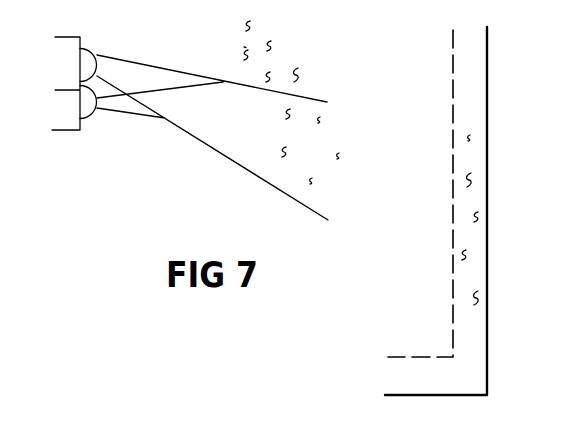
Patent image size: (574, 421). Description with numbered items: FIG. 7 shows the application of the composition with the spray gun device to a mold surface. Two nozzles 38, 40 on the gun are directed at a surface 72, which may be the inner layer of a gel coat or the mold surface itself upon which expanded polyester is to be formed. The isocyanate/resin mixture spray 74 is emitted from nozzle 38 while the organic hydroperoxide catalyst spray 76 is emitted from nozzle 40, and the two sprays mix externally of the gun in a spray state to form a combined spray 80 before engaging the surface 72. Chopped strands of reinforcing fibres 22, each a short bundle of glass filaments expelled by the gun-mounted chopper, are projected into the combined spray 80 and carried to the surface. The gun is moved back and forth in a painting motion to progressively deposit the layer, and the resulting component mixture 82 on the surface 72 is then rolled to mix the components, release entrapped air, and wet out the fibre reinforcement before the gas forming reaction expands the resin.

The reinforcing fibres 22 is at (272, 43).
The nozzle 38 is at (88, 63).
The nozzle 40 is at (88, 103).
The surface 72 is at (487, 217).
The isocyanate/resin mixture spray 74 is at (145, 76).
The organic hydroperoxide catalyst spray 76 is at (135, 108).
The combined spray 80 is at (223, 128).
The component mixture 82 is at (451, 231).